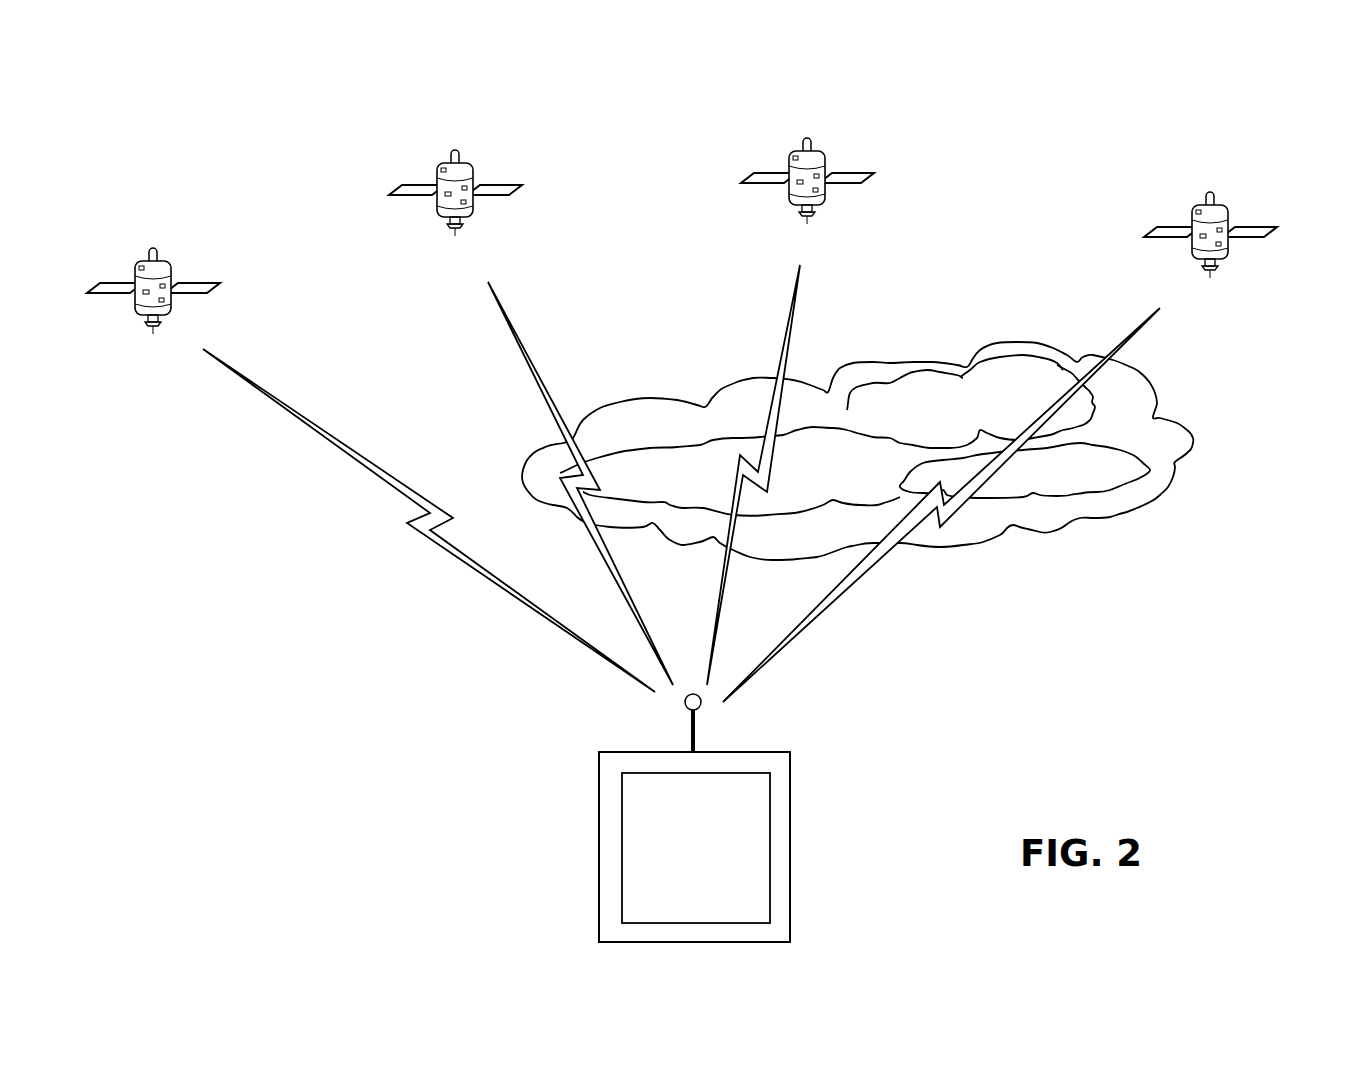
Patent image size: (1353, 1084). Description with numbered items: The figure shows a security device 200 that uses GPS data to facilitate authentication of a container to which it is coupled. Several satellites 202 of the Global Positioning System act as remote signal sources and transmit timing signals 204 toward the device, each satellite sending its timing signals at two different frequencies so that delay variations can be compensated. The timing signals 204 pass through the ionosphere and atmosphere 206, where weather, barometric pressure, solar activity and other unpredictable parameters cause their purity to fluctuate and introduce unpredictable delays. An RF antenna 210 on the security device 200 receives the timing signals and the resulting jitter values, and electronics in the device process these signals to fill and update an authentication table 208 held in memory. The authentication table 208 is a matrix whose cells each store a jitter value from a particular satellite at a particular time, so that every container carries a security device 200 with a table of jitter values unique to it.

The security device 200 is at (620, 827).
The satellite 202 is at (380, 197).
The timing signal 204 is at (513, 337).
The ionosphere and atmosphere 206 is at (1117, 522).
The authentication table 208 is at (696, 848).
The antenna 210 is at (698, 728).